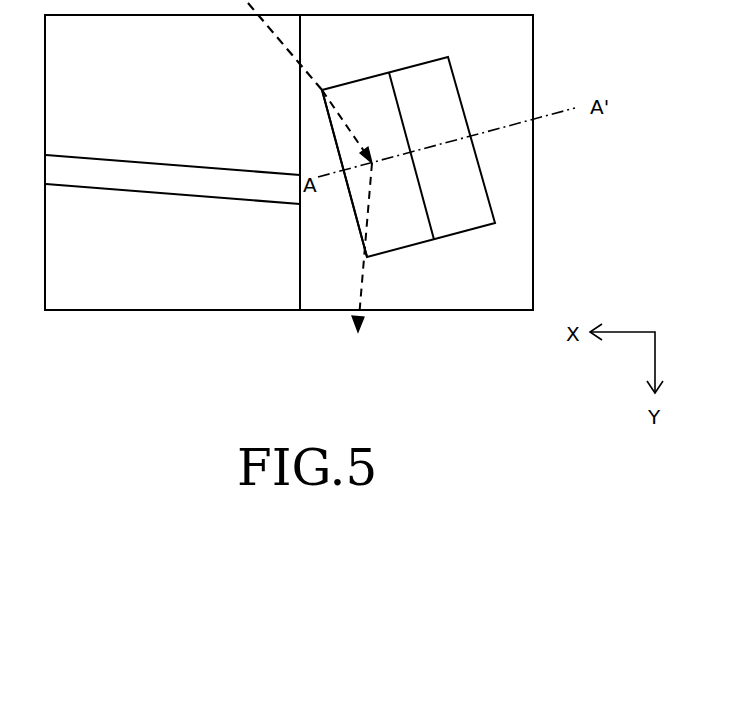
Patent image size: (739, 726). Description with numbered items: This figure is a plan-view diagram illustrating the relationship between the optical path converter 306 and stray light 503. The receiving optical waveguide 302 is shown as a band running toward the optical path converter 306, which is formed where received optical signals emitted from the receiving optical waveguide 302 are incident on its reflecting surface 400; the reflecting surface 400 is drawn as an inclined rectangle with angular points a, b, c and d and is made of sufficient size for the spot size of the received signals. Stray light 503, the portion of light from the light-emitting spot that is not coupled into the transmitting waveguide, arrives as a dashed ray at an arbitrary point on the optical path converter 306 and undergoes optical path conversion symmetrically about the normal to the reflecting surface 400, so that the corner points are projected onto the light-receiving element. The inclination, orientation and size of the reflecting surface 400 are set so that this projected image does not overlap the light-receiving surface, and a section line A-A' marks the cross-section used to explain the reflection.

The receiving optical waveguide 302 is at (218, 200).
The optical path converter 306 is at (418, 55).
The reflecting surface 400 is at (367, 235).
The stray light 503 is at (302, 72).